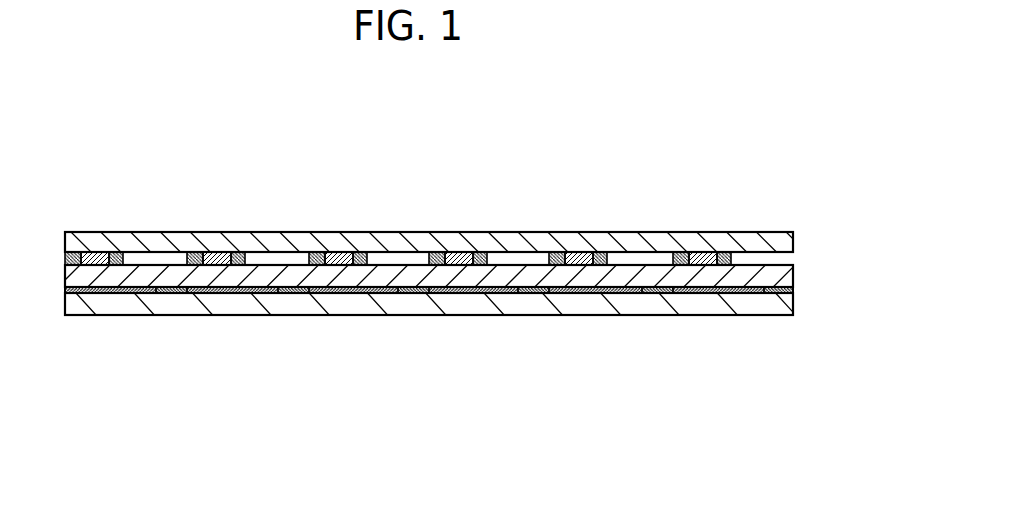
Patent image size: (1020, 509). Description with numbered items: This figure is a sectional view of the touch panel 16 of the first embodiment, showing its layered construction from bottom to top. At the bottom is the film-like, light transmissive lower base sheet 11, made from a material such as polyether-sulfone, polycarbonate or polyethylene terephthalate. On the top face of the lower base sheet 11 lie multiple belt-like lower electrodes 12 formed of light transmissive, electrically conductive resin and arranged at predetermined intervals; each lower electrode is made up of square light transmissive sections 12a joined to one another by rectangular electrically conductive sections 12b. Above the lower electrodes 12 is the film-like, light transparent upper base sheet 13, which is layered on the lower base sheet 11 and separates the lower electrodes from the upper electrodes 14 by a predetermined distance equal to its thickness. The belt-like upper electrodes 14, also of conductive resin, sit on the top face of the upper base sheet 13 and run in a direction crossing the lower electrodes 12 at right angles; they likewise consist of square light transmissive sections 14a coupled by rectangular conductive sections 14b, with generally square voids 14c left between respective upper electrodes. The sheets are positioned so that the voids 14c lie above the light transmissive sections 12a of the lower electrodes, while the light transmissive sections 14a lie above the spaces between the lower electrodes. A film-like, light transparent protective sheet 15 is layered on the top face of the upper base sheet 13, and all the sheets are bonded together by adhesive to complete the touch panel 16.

The lower base sheet 11 is at (635, 303).
The lower electrodes 12 is at (429, 354).
The light transmissive sections 12a is at (342, 293).
The electrically conductive sections 12b is at (323, 370).
The upper base sheet 13 is at (783, 280).
The upper electrodes 14 is at (627, 163).
The light transmissive sections 14a is at (558, 252).
The electrically conductive sections 14b is at (587, 252).
The voids 14c is at (650, 258).
The protective sheet 15 is at (243, 242).
The touch panel 16 is at (730, 206).